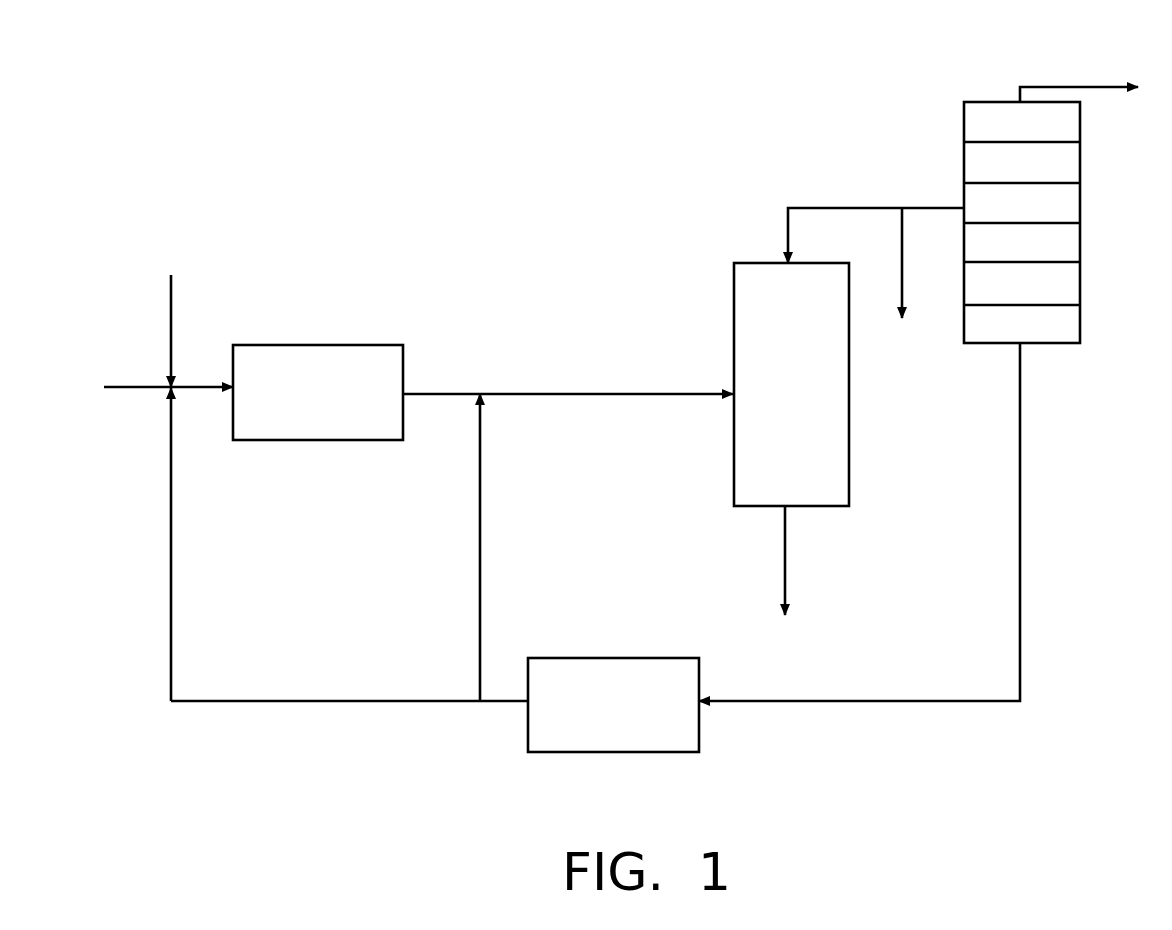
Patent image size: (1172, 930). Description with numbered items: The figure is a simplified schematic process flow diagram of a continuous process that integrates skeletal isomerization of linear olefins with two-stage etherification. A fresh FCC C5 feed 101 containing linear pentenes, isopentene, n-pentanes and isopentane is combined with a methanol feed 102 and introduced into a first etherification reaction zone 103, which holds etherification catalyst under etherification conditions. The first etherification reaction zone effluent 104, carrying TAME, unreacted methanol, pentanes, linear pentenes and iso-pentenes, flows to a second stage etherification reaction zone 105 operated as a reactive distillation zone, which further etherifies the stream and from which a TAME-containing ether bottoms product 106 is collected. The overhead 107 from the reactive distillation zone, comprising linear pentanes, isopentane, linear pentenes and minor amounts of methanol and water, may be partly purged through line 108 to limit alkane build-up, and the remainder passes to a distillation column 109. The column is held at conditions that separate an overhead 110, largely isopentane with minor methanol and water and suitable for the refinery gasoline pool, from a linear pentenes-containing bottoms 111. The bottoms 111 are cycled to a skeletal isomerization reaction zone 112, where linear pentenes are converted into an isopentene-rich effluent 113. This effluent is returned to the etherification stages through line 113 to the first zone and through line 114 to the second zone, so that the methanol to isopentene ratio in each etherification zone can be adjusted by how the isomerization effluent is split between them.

The fresh FCC C5 feed 101 is at (118, 386).
The methanol feed 102 is at (173, 346).
The first etherification reaction zone 103 is at (330, 345).
The first etherification reaction zone effluent 104 is at (570, 393).
The second stage etherification reaction zone 105 is at (850, 402).
The TAME-containing ether bottoms product 106 is at (786, 565).
The overhead 107 is at (834, 207).
The purge line 108 is at (903, 275).
The distillation column 109 is at (1081, 207).
The overhead 110 is at (1057, 86).
The linear pentenes-containing bottoms 111 is at (1021, 555).
The skeletal isomerization reaction zone 112 is at (625, 753).
The isopentene-rich effluent 113 is at (373, 703).
The line 114 is at (481, 566).